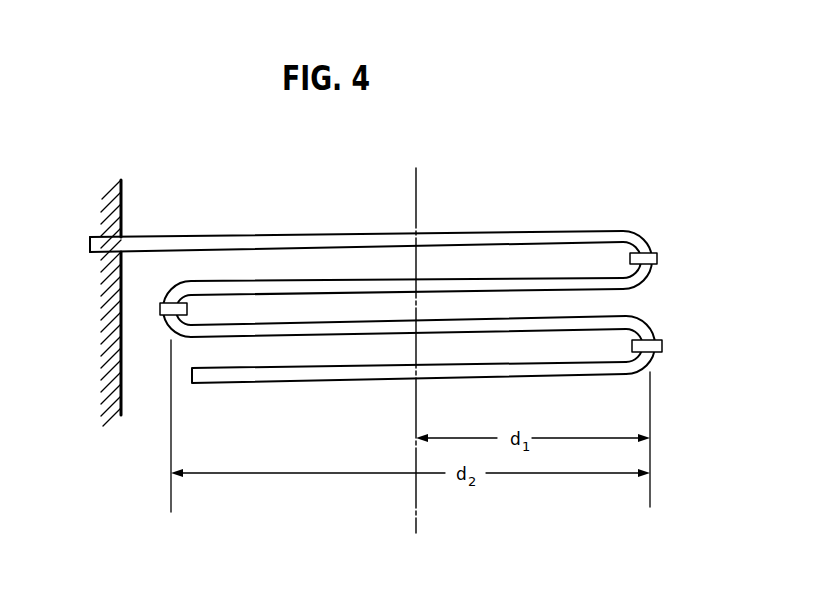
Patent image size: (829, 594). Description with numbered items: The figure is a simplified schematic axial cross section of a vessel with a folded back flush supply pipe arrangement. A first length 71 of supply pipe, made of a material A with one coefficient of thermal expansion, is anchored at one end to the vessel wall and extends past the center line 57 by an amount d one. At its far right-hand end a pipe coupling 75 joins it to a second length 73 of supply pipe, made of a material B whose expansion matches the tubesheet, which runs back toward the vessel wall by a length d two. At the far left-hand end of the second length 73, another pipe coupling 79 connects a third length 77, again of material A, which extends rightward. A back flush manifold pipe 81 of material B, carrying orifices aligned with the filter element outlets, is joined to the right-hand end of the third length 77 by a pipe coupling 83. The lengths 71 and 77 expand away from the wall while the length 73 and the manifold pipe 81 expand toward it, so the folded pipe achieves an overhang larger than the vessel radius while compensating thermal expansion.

The center line 57 is at (416, 200).
The first length of supply pipe 71 is at (503, 235).
The second length of supply pipe 73 is at (555, 262).
The pipe coupling 75 is at (657, 257).
The third length of supply pipe 77 is at (480, 306).
The pipe coupling 79 is at (162, 310).
The back flush manifold pipe 81 is at (290, 373).
The pipe coupling 83 is at (655, 346).